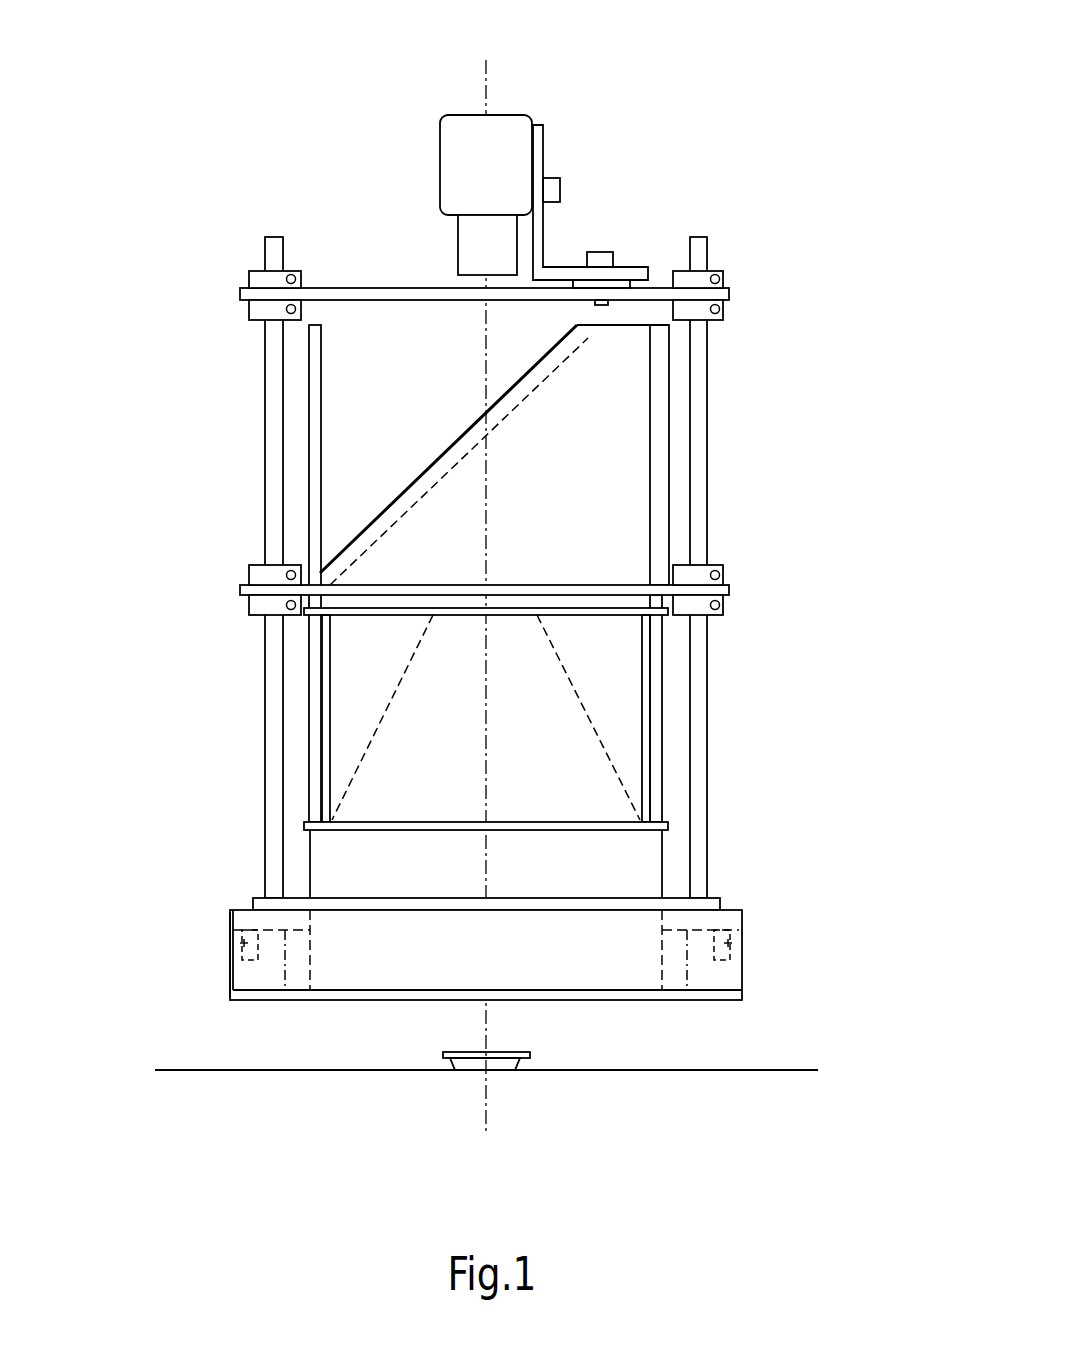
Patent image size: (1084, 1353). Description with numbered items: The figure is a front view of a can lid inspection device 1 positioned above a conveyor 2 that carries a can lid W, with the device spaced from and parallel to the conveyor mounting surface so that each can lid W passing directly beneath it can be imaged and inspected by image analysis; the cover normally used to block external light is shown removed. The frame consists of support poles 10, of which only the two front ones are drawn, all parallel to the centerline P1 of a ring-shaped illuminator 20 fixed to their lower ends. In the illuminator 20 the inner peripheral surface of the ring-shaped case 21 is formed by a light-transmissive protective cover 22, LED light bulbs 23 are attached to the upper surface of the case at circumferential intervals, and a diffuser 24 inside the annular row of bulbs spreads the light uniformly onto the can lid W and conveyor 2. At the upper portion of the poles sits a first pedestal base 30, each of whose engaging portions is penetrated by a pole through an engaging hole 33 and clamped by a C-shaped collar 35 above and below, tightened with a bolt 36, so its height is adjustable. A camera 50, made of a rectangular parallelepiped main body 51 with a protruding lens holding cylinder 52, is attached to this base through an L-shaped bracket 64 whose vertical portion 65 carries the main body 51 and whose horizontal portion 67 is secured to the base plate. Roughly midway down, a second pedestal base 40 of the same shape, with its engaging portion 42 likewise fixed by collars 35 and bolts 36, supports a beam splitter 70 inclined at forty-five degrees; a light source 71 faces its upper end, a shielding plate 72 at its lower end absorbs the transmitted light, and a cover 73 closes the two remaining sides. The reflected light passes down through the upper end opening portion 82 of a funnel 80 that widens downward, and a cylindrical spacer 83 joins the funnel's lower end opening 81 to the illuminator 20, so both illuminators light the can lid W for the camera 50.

The can lid inspection device 1 is at (836, 182).
The conveyor 2 is at (763, 1070).
The support poles 10 is at (273, 450).
The illuminator 20 is at (481, 980).
The ring-shaped case 21 is at (232, 965).
The light-transmissive protective cover 22 is at (310, 957).
The LED light bulbs 23 is at (243, 940).
The diffuser 24 is at (284, 970).
The first pedestal base 30 is at (481, 237).
The engaging hole 33 is at (248, 295).
The C-shaped collar 35 is at (257, 279).
The bolt 36 is at (291, 274).
The second pedestal base 40 is at (470, 551).
The engaging portion 42 is at (248, 592).
The camera 50 is at (422, 137).
The main body 51 is at (457, 170).
The lens holding cylinder 52 is at (470, 253).
The L-shaped bracket 64 is at (610, 182).
The vertical portion 65 is at (538, 225).
The horizontal portion 67 is at (635, 273).
The beam splitter 70 is at (432, 476).
The light source 71 is at (660, 410).
The shielding plate 72 is at (316, 410).
The cover 73 is at (592, 497).
The funnel 80 is at (574, 753).
The lower end opening 81 is at (555, 832).
The upper end opening portion 82 is at (505, 622).
The cylindrical spacer 83 is at (635, 882).
The centerline P1 is at (487, 576).
The can lid W is at (506, 1052).